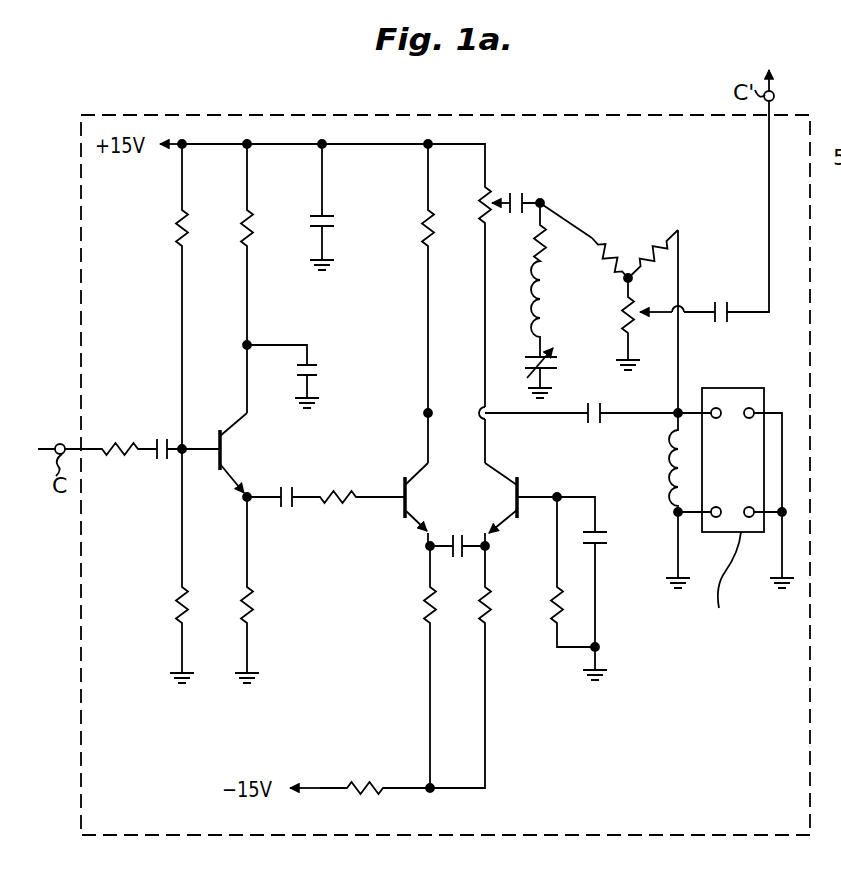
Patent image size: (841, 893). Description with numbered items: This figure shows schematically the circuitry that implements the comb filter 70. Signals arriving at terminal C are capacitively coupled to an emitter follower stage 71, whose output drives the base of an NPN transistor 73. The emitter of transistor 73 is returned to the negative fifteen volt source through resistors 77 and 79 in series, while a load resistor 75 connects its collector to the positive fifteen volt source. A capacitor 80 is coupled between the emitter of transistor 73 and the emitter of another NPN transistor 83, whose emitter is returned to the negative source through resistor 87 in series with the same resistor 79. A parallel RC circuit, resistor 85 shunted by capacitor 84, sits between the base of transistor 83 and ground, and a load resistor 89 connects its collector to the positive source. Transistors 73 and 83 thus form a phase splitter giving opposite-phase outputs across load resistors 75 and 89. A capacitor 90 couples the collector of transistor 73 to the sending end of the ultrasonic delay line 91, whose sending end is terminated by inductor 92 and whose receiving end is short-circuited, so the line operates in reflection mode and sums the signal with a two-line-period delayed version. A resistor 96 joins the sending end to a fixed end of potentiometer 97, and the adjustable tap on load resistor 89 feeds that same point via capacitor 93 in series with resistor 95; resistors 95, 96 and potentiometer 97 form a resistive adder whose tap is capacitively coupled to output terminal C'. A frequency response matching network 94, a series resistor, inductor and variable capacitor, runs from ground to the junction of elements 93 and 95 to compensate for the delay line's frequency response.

The comb filter 70 is at (227, 115).
The emitter follower stage 71 is at (232, 416).
The NPN transistor 73 is at (402, 478).
The load resistor 75 is at (427, 230).
The resistor 77 is at (424, 599).
The resistor 79 is at (374, 782).
The capacitor 80 is at (466, 531).
The NPN transistor 83 is at (519, 477).
The capacitor 84 is at (600, 550).
The resistor 85 is at (556, 590).
The resistor 87 is at (490, 620).
The load resistor 89 is at (482, 205).
The capacitor 90 is at (600, 422).
The ultrasonic delay line 91 is at (752, 365).
The inductor 92 is at (674, 471).
The capacitor 93 is at (527, 194).
The frequency response matching network 94 is at (528, 330).
The resistor 95 is at (597, 242).
The resistor 96 is at (660, 240).
The potentiometer 97 is at (620, 326).